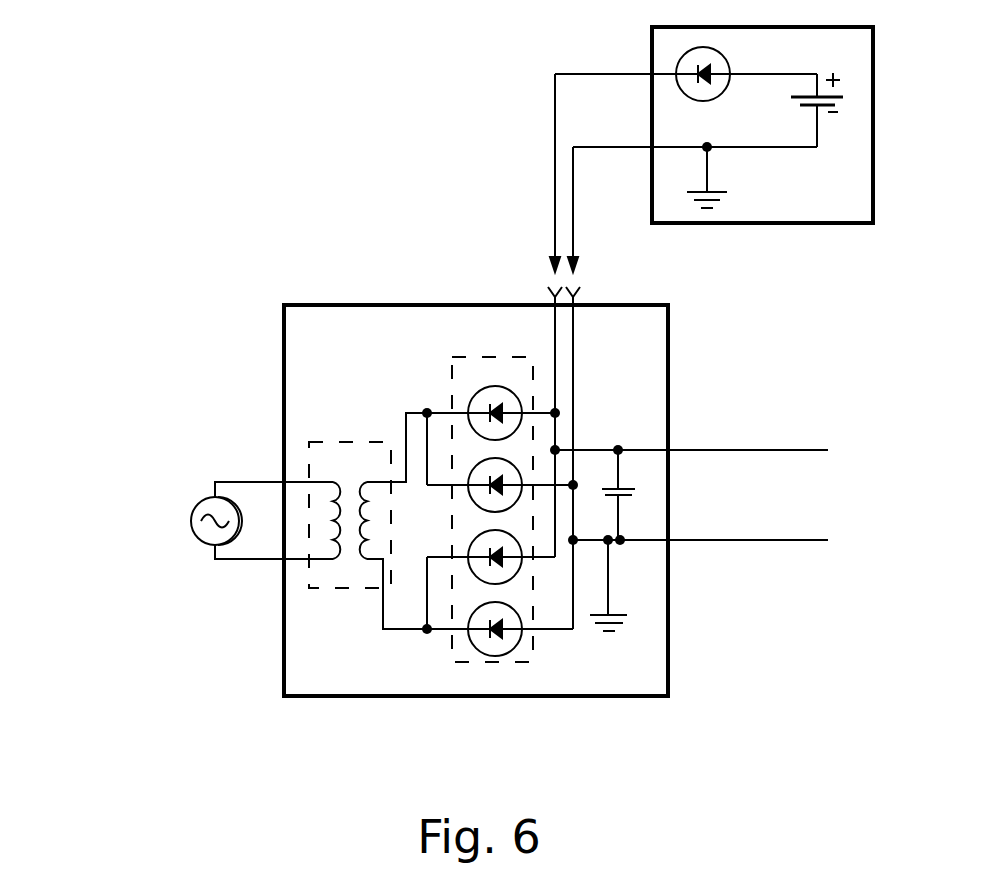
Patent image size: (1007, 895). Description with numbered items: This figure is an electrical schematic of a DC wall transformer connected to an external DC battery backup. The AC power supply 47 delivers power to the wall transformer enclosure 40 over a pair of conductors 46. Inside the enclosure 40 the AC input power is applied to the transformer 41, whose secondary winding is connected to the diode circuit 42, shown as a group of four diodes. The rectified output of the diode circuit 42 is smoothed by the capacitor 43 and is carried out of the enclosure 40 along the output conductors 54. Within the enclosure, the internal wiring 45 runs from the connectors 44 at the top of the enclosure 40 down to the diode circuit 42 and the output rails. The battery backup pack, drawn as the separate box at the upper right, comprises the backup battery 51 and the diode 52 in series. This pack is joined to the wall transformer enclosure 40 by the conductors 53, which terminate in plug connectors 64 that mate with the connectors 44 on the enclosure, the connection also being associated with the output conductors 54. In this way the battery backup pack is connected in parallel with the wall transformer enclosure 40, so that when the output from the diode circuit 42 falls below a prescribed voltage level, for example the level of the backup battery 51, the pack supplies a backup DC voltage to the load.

The wall transformer enclosure 40 is at (474, 741).
The transformer 41 is at (368, 521).
The diode circuit 42 is at (500, 509).
The capacitor 43 is at (612, 523).
The connectors 44 is at (578, 293).
The internal wires 45 is at (578, 463).
The conductors 46 is at (274, 506).
The AC power supply 47 is at (142, 529).
The backup battery 51 is at (823, 107).
The diode 52 is at (717, 82).
The conductors 53 is at (605, 147).
The conductors 54 is at (773, 539).
The connector plugs 64 is at (578, 262).